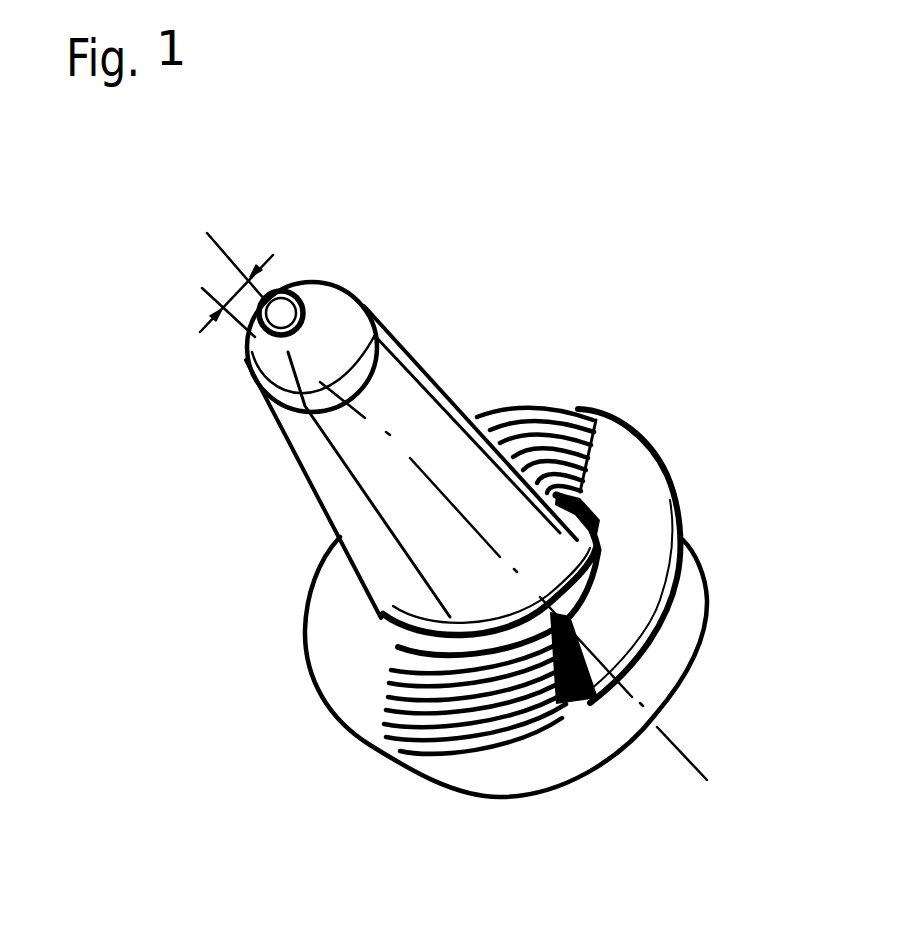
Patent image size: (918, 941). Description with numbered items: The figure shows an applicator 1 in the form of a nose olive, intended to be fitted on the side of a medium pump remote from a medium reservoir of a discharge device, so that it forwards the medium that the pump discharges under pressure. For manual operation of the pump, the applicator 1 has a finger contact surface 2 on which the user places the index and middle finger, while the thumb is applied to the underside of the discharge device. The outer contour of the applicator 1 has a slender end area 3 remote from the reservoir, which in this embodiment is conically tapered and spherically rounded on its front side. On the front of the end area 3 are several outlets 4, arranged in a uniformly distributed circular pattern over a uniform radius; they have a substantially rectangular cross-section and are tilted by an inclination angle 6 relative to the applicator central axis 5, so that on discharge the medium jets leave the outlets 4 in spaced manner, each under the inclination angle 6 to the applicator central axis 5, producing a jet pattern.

The applicator 1 is at (654, 356).
The finger contact surface 2 is at (377, 752).
The slender end area 3 is at (350, 503).
The outlet 4 is at (247, 353).
The applicator central axis 5 is at (680, 748).
The inclination angle 6 is at (248, 283).